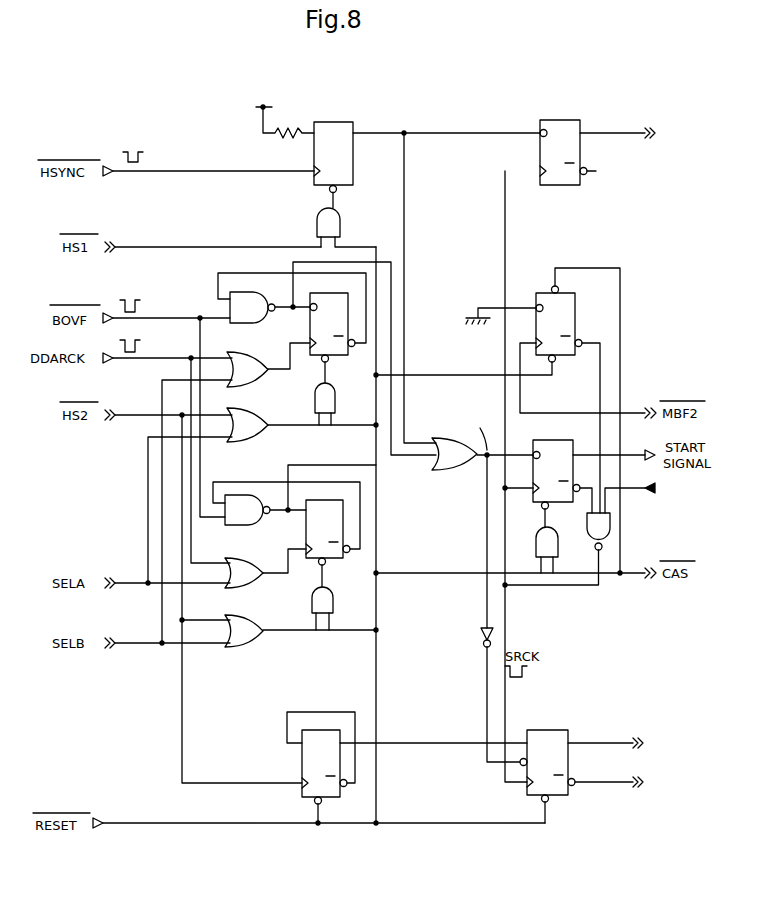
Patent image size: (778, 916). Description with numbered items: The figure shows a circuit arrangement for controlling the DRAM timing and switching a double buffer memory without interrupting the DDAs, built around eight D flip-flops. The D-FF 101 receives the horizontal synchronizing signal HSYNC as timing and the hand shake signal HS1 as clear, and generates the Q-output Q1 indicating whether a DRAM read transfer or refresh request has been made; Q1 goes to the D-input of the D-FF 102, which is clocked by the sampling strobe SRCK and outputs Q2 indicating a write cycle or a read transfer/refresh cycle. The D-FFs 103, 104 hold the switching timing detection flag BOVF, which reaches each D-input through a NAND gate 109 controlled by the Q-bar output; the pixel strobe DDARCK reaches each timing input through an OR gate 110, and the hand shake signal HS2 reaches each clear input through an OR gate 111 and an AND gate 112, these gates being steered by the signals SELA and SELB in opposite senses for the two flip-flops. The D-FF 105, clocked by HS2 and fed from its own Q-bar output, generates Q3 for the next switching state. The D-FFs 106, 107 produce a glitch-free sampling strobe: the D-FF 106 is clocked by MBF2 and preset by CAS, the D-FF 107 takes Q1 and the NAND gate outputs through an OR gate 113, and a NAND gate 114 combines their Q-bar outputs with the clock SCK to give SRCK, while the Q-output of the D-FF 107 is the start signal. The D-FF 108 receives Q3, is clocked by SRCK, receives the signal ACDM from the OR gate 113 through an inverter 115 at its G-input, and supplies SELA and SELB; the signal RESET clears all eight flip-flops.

The D-FF 101 is at (345, 125).
The D-FF 102 is at (562, 124).
The D-FF 103 is at (340, 356).
The D-FF 104 is at (336, 560).
The D-FF 105 is at (305, 765).
The D-FF 106 is at (572, 316).
The D-FF 107 is at (566, 440).
The D-FF 108 is at (548, 732).
The NAND gate 109 is at (231, 533).
The OR gate 110 is at (275, 595).
The OR gate 111 is at (235, 680).
The AND gate 112 is at (324, 420).
The OR gate 113 is at (447, 470).
The NAND gate 114 is at (607, 555).
The inverter 115 is at (477, 632).